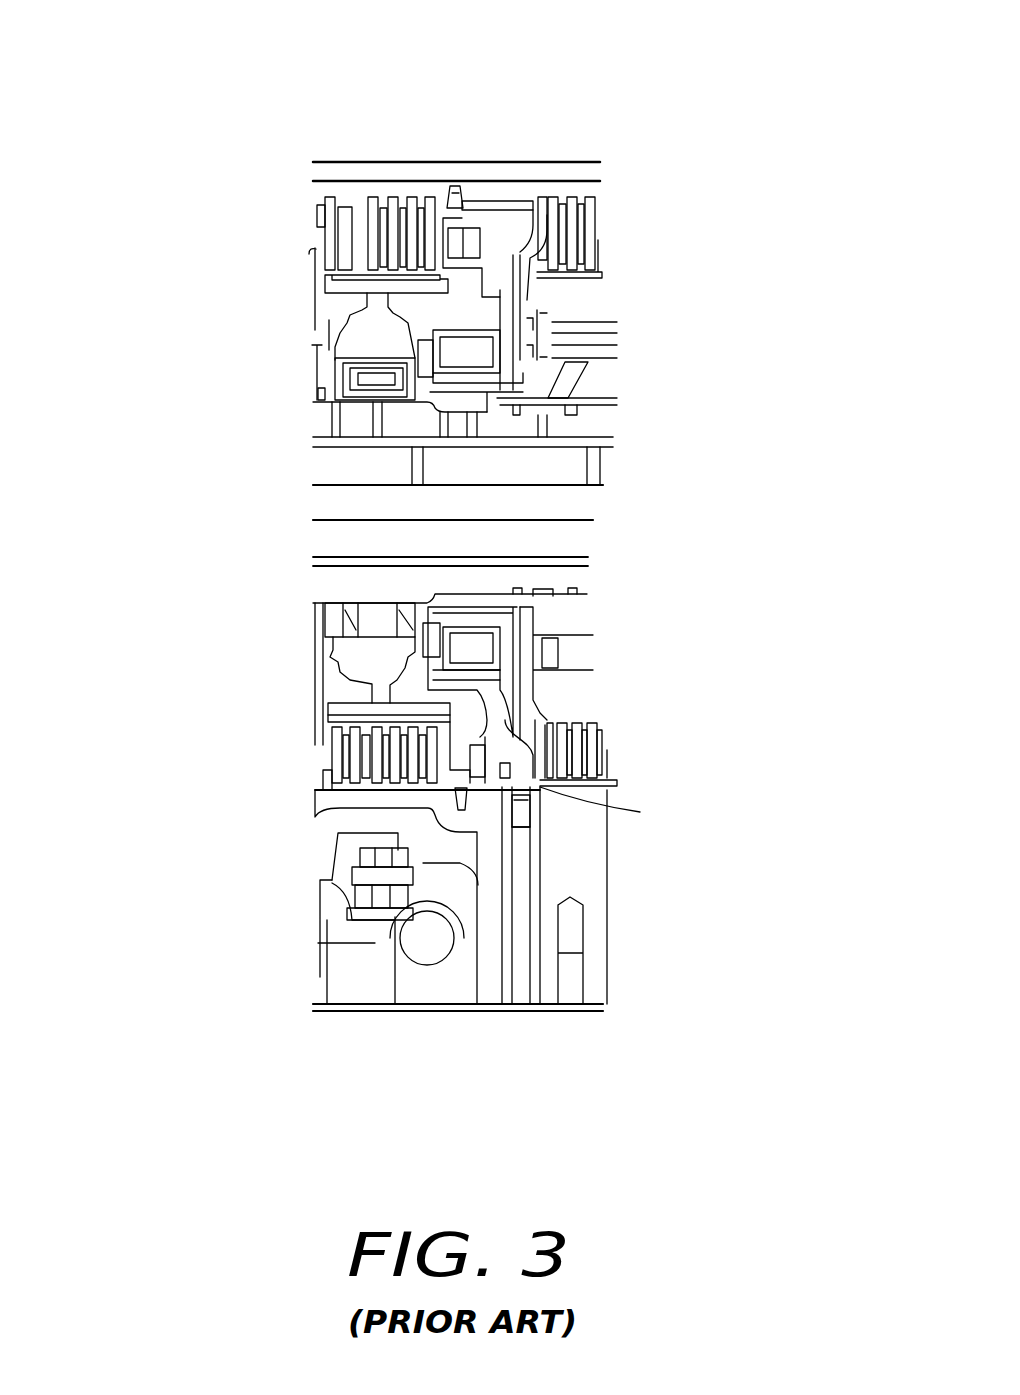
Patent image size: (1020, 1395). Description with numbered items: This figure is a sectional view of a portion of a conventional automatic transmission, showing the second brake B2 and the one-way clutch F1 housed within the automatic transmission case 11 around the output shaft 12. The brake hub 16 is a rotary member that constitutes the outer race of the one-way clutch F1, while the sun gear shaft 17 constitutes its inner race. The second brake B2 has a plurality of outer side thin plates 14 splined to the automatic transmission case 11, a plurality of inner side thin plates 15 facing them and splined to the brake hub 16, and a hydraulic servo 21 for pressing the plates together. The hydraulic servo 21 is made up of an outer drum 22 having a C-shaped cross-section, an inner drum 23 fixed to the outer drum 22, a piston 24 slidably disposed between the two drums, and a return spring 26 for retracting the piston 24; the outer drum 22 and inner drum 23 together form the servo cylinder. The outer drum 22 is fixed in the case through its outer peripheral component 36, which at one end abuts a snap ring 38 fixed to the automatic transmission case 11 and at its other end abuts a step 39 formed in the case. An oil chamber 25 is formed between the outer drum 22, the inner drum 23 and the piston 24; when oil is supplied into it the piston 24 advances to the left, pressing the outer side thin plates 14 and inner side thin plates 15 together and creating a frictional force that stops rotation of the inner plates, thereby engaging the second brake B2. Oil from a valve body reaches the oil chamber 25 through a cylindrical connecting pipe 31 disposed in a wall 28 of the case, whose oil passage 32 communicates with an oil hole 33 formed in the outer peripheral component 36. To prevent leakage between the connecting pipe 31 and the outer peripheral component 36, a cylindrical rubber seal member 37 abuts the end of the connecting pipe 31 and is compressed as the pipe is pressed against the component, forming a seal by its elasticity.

The automatic transmission case 11 is at (320, 165).
The output shaft 12 is at (347, 473).
The outer side thin plates 14 is at (352, 200).
The inner side thin plates 15 is at (323, 240).
The brake hub 16 is at (367, 322).
The sun gear shaft 17 is at (350, 418).
The hydraulic servo 21 is at (535, 190).
The outer drum 22 is at (534, 232).
The inner drum 23 is at (522, 312).
The piston 24 is at (510, 192).
The oil chamber 25 is at (520, 717).
The return spring 26 is at (474, 352).
The wall 28 is at (587, 887).
The connecting pipe 31 is at (497, 926).
The oil passage 32 is at (521, 977).
The oil hole 33 is at (613, 797).
The outer peripheral component 36 is at (486, 792).
The seal member 37 is at (540, 810).
The snap ring 38 is at (455, 182).
The step 39 is at (534, 195).
The second brake B2 is at (382, 190).
The one-way clutch F1 is at (314, 386).